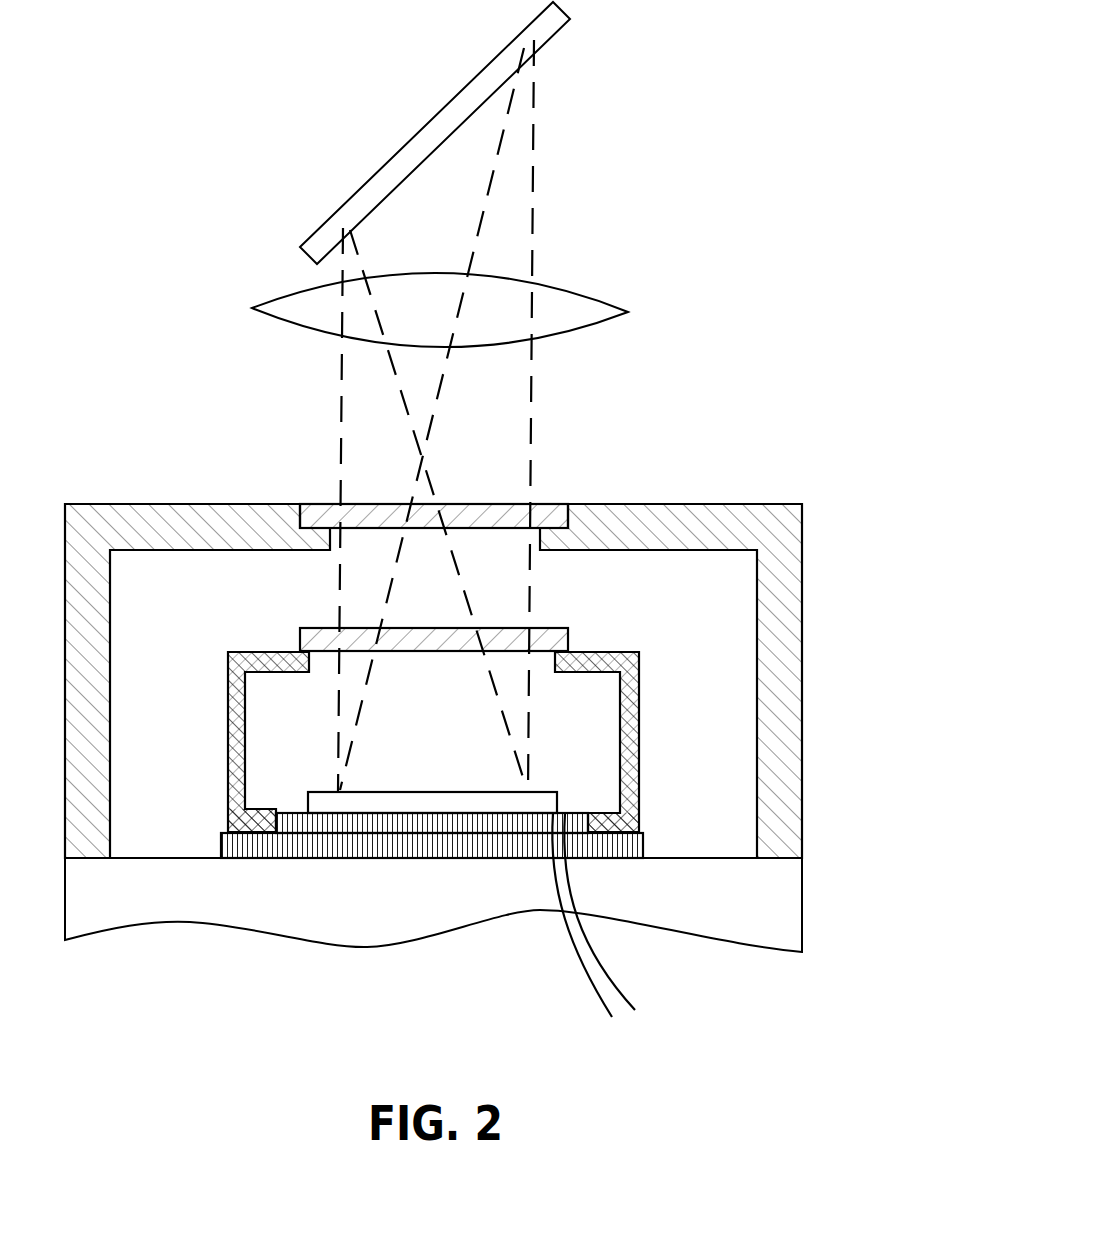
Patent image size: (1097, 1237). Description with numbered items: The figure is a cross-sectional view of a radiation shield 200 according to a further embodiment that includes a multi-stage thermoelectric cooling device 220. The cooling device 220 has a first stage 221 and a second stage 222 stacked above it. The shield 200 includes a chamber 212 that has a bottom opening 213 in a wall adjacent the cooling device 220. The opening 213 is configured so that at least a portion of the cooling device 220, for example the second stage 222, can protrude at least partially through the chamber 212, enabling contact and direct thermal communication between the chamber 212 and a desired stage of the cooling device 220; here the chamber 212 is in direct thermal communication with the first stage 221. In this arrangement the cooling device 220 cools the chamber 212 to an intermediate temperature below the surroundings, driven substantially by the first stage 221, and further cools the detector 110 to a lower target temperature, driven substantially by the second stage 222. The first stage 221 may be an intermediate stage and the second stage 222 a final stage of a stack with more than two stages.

The radiation shield 200 is at (678, 641).
The chamber 212 is at (595, 655).
The bottom opening 213 is at (590, 826).
The detector 110 is at (555, 795).
The second stage 222 is at (296, 815).
The multi-stage cooling device 220 is at (222, 840).
The first stage 221 is at (267, 852).